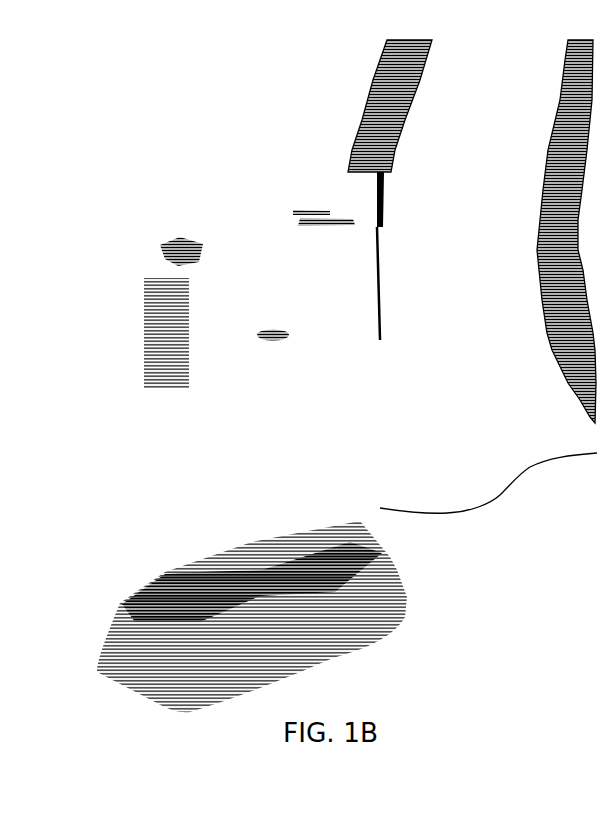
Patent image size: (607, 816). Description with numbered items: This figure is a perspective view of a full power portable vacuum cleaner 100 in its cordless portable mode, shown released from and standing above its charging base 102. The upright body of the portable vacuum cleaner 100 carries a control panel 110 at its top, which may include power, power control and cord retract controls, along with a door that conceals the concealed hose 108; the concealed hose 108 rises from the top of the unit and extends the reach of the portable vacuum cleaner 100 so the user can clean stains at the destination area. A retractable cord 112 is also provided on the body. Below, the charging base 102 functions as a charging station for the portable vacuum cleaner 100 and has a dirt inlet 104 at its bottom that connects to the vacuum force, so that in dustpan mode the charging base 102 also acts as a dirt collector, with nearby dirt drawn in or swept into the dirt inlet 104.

The portable vacuum cleaner 100 is at (135, 505).
The charging base 102 is at (405, 590).
The dirt inlet 104 is at (357, 648).
The concealed hose 108 is at (367, 85).
The control panel 110 is at (147, 230).
The retractable cord 112 is at (137, 388).